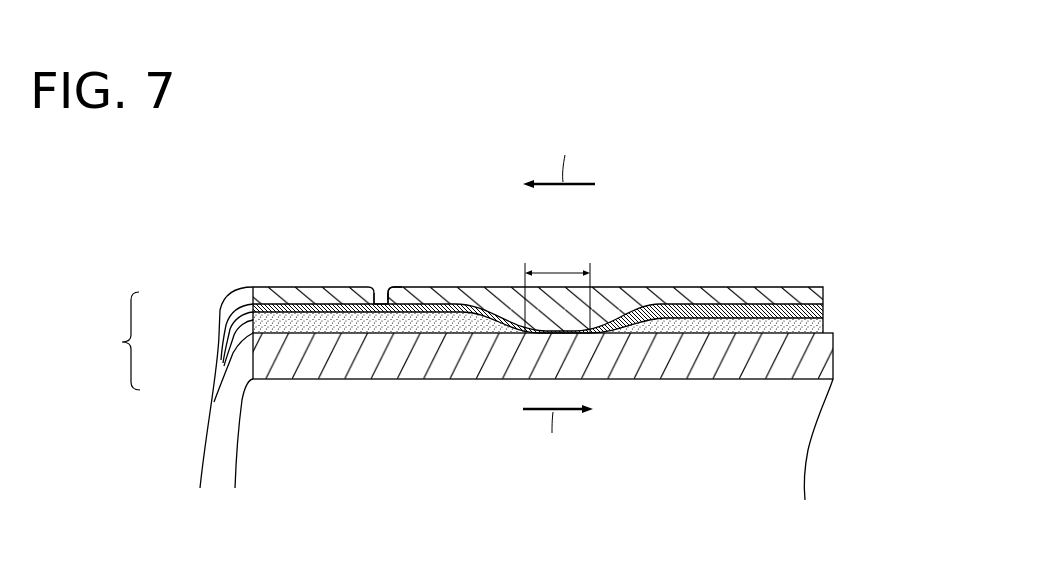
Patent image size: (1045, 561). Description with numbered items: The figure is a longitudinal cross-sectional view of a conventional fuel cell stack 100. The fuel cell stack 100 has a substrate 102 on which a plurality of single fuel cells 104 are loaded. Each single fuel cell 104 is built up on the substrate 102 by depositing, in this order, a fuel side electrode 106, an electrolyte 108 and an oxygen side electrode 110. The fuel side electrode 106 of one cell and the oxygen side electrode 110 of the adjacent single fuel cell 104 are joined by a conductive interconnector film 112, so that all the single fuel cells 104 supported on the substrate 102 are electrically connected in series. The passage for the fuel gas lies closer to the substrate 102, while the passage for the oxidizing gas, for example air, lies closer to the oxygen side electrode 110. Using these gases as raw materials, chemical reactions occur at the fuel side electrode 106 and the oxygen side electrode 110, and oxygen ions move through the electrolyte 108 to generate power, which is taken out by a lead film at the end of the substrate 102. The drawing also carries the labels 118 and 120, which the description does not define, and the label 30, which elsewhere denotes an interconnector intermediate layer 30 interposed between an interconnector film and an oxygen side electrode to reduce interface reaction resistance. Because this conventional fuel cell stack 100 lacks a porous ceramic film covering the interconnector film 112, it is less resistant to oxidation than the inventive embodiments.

The fuel cell stack 100 is at (452, 143).
The substrate 102 is at (826, 357).
The single fuel cell 104 is at (108, 341).
The fuel side electrode 106 is at (216, 362).
The electrolyte 108 is at (220, 329).
The oxygen side electrode 110 is at (230, 296).
The interconnector film 112 is at (460, 302).
The thin layer 118 is at (823, 310).
The edge portion 120 is at (417, 300).
The interconnector intermediate layer 30 is at (378, 298).